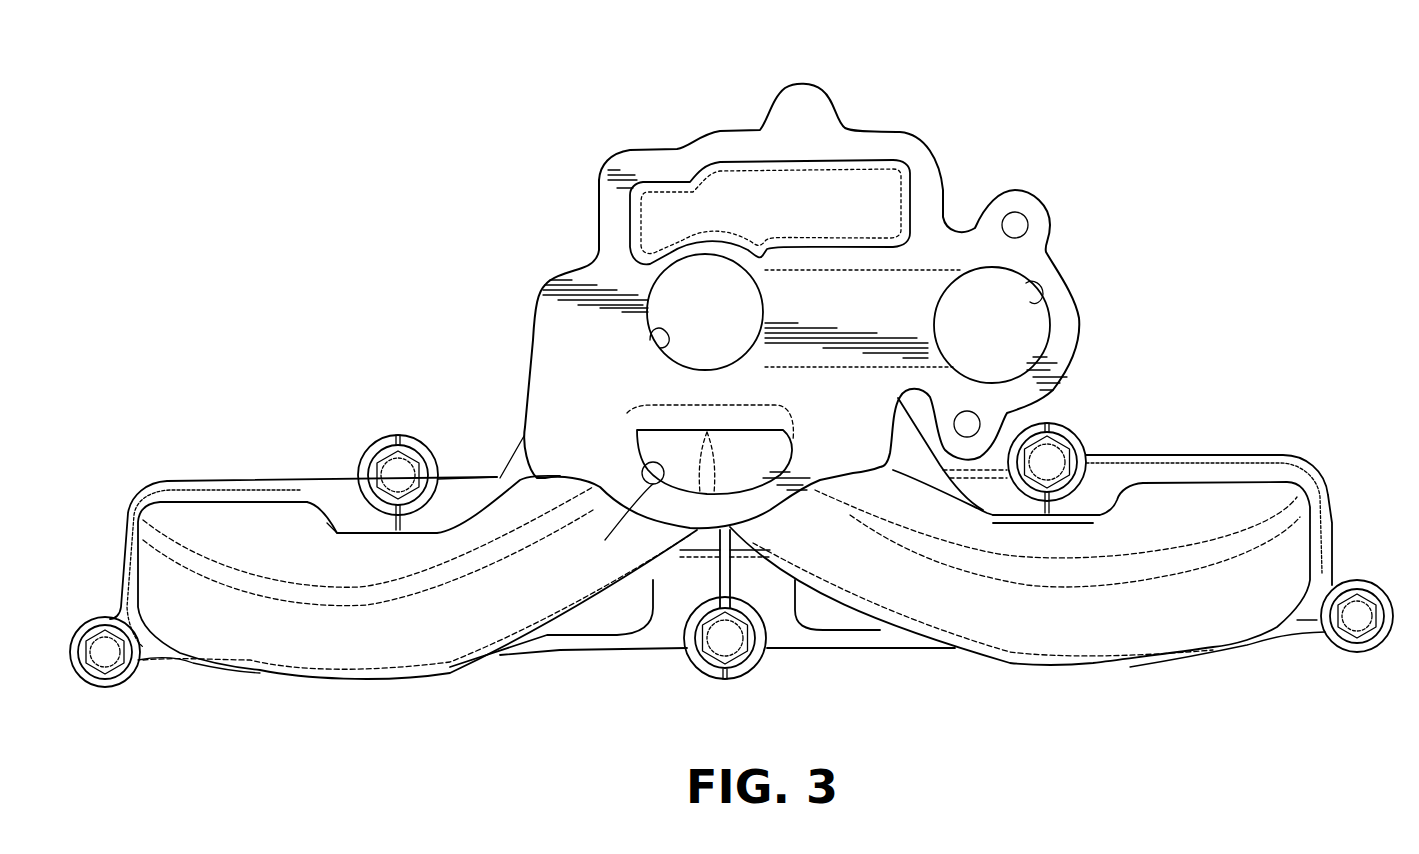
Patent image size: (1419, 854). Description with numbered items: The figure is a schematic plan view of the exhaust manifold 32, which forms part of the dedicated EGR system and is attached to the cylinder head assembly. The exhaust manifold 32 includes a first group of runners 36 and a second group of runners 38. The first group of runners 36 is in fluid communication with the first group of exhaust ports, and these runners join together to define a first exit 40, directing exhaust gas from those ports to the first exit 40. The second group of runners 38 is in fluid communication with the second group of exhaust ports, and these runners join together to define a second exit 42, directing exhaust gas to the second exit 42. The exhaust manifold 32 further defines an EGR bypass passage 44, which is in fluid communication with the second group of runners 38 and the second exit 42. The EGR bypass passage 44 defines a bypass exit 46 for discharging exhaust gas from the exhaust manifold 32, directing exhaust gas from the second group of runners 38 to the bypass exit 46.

The exhaust manifold 32 is at (731, 421).
The first group of runners 36 is at (350, 650).
The second group of runners 38 is at (617, 620).
The first exit 40 is at (668, 478).
The second exit 42 is at (658, 345).
The EGR bypass passage 44 is at (855, 268).
The bypass exit 46 is at (1038, 299).